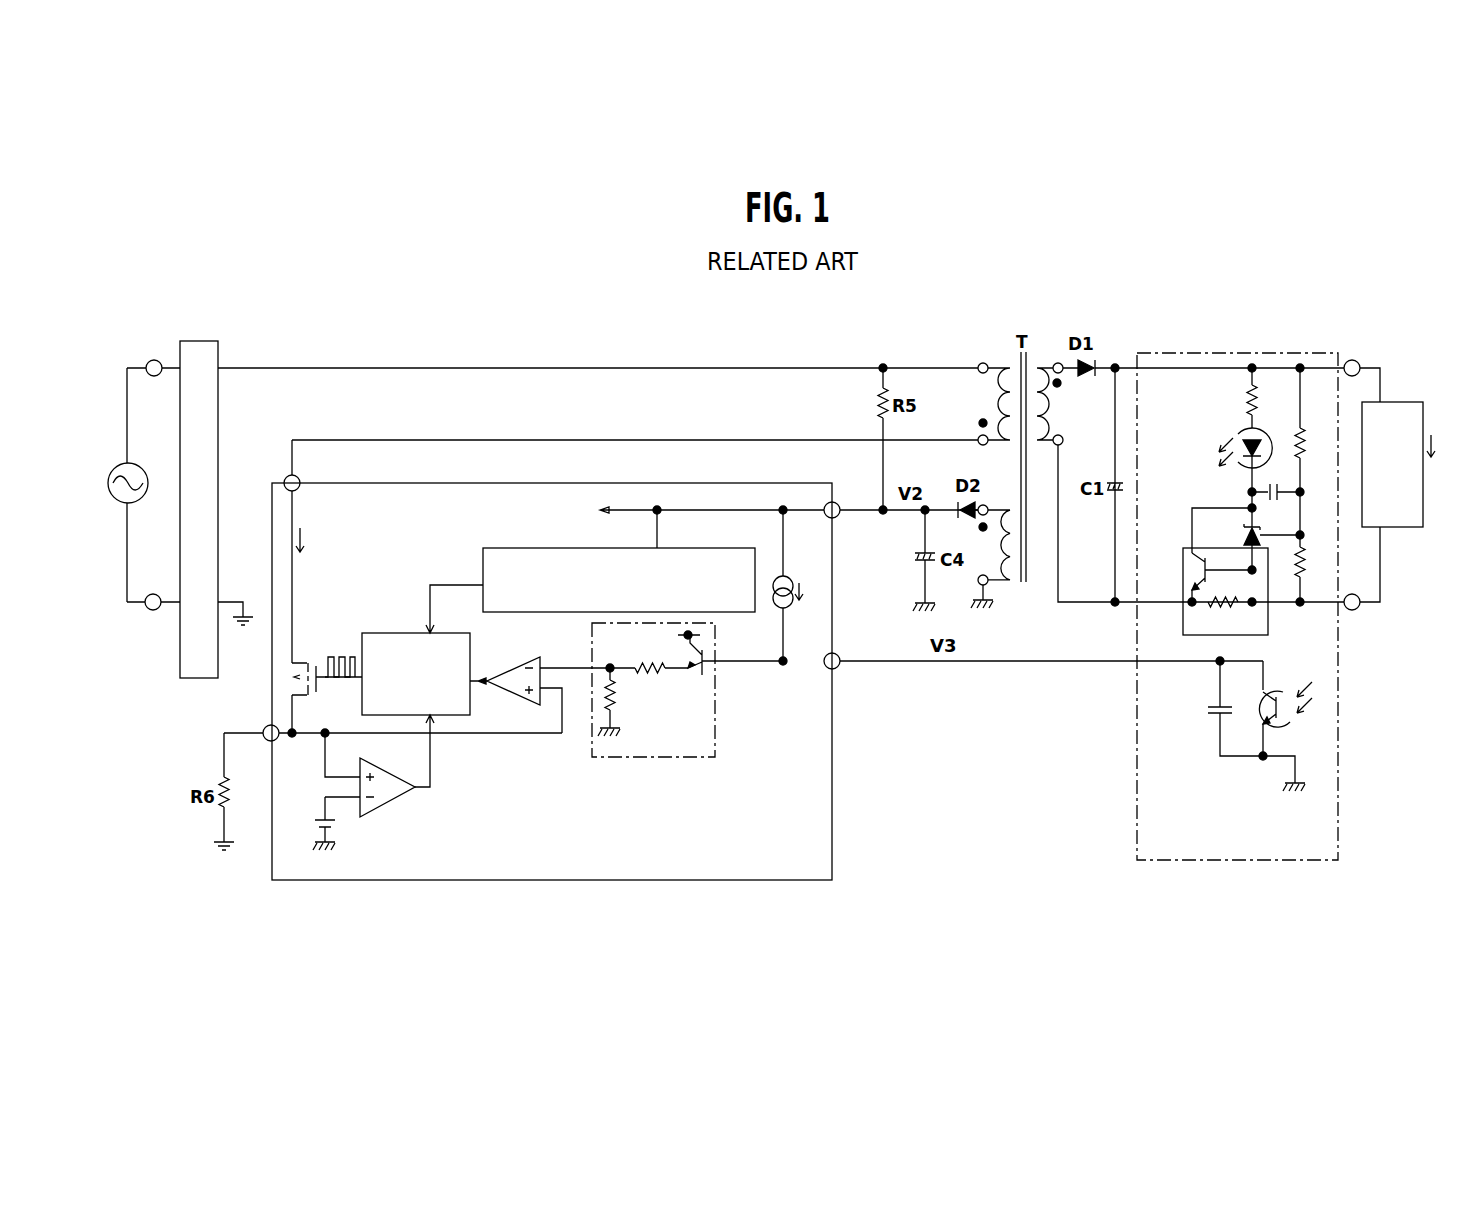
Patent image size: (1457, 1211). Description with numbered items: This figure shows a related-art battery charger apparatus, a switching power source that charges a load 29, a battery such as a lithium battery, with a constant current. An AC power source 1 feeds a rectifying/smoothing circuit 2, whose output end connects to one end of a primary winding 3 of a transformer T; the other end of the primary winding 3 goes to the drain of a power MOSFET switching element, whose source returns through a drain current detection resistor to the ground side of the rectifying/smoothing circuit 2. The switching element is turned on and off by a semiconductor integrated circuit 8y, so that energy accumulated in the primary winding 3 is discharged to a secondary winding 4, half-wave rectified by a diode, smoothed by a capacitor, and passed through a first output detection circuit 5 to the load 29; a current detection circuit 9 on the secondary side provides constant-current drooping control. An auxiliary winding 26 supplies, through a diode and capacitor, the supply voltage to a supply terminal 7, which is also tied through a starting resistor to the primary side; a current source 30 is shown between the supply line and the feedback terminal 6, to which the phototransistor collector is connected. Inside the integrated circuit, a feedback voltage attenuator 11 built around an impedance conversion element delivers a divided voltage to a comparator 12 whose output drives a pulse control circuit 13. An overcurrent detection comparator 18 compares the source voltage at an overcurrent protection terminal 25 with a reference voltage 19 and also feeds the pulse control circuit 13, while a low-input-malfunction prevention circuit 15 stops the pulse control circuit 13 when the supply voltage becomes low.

The AC power source 1 is at (140, 480).
The rectifying/smoothing circuit 2 is at (198, 341).
The primary winding 3 is at (986, 405).
The secondary winding 4 is at (1046, 418).
The first output detection circuit 5 is at (1254, 640).
The feedback FB terminal 6 is at (837, 669).
The Vcc terminal 7 is at (834, 500).
The semiconductor integrated circuit 8y is at (500, 880).
The current detection circuit 9 is at (1268, 628).
The feedback voltage attenuator 11 is at (636, 757).
The comparator 12 is at (520, 656).
The pulse control circuit 13 is at (400, 633).
The low-input-malfunction prevention circuit 15 is at (483, 566).
The overcurrent detection comparator 18 is at (394, 805).
The reference voltage 19 is at (334, 822).
The overcurrent protection terminal OCP 25 is at (266, 724).
The auxiliary winding 26 is at (978, 566).
The load 29 is at (1385, 527).
The constant current source 30 is at (792, 584).